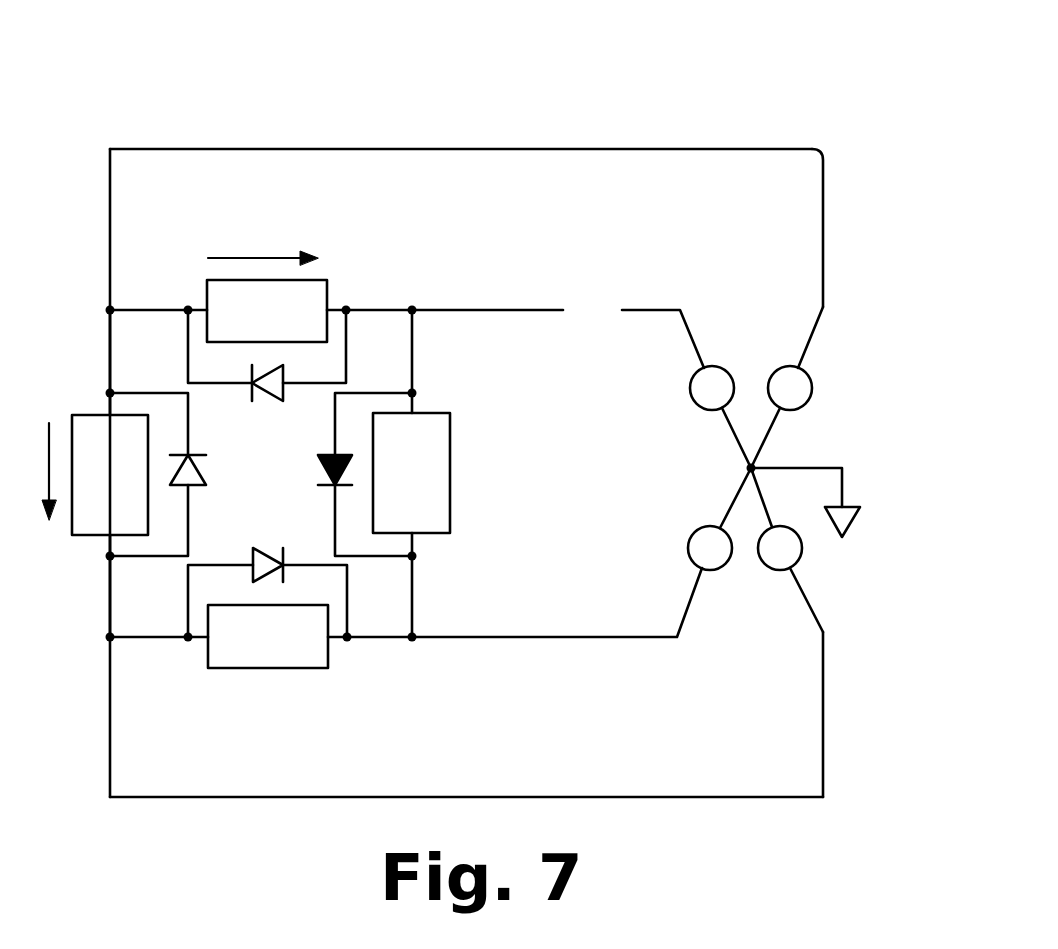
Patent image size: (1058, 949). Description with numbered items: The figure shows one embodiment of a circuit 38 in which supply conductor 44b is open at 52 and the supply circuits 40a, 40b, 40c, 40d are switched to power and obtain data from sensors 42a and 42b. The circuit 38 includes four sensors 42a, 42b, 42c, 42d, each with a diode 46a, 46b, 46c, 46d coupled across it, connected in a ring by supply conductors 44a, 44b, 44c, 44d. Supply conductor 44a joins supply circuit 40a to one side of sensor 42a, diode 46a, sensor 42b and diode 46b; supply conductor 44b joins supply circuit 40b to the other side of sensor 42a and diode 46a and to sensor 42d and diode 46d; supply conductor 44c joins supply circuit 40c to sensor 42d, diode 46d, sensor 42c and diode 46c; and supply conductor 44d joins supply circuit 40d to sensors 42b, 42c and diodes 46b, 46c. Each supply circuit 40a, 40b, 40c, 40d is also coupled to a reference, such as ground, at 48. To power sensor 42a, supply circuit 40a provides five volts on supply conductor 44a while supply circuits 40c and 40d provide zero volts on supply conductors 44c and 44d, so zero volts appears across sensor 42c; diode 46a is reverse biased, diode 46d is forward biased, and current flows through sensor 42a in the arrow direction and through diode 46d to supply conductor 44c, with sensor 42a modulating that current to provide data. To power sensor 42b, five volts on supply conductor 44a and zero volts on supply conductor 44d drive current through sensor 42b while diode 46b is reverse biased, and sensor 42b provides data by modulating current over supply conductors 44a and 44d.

The circuit 38 is at (848, 109).
The supply circuit 40a is at (812, 385).
The supply circuit 40b is at (722, 365).
The supply circuit 40c is at (683, 540).
The supply circuit 40d is at (770, 575).
The sensor 42a is at (212, 291).
The sensor 42b is at (83, 418).
The sensor 42c is at (330, 665).
The sensor 42d is at (433, 413).
The supply conductor 44a is at (618, 148).
The supply conductor 44b is at (640, 310).
The supply conductor 44c is at (540, 635).
The supply conductor 44d is at (570, 795).
The diode 46a is at (266, 394).
The diode 46b is at (203, 468).
The diode 46c is at (265, 556).
The diode 46d is at (327, 462).
The reference 48 is at (845, 468).
The open 52 is at (598, 312).